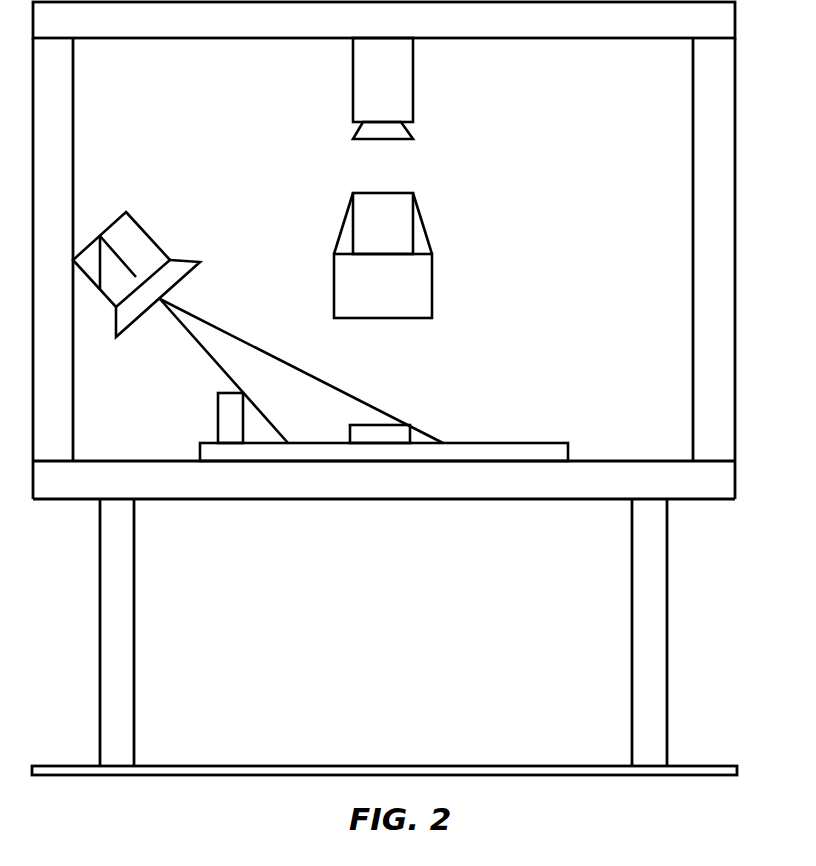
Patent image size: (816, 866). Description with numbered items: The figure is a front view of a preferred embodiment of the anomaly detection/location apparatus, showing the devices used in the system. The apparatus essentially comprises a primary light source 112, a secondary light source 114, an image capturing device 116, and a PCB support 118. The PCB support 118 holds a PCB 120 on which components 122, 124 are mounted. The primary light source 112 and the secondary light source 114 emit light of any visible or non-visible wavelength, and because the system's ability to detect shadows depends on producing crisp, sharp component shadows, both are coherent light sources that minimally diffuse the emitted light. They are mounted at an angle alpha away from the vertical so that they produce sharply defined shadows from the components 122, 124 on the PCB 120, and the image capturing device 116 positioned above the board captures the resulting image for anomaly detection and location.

The primary light source 112 is at (258, 325).
The secondary light source 114 is at (419, 255).
The image capturing device 116 is at (351, 88).
The PCB support 118 is at (384, 388).
The PCB 120 is at (384, 438).
The component 122 is at (197, 418).
The component 124 is at (353, 420).